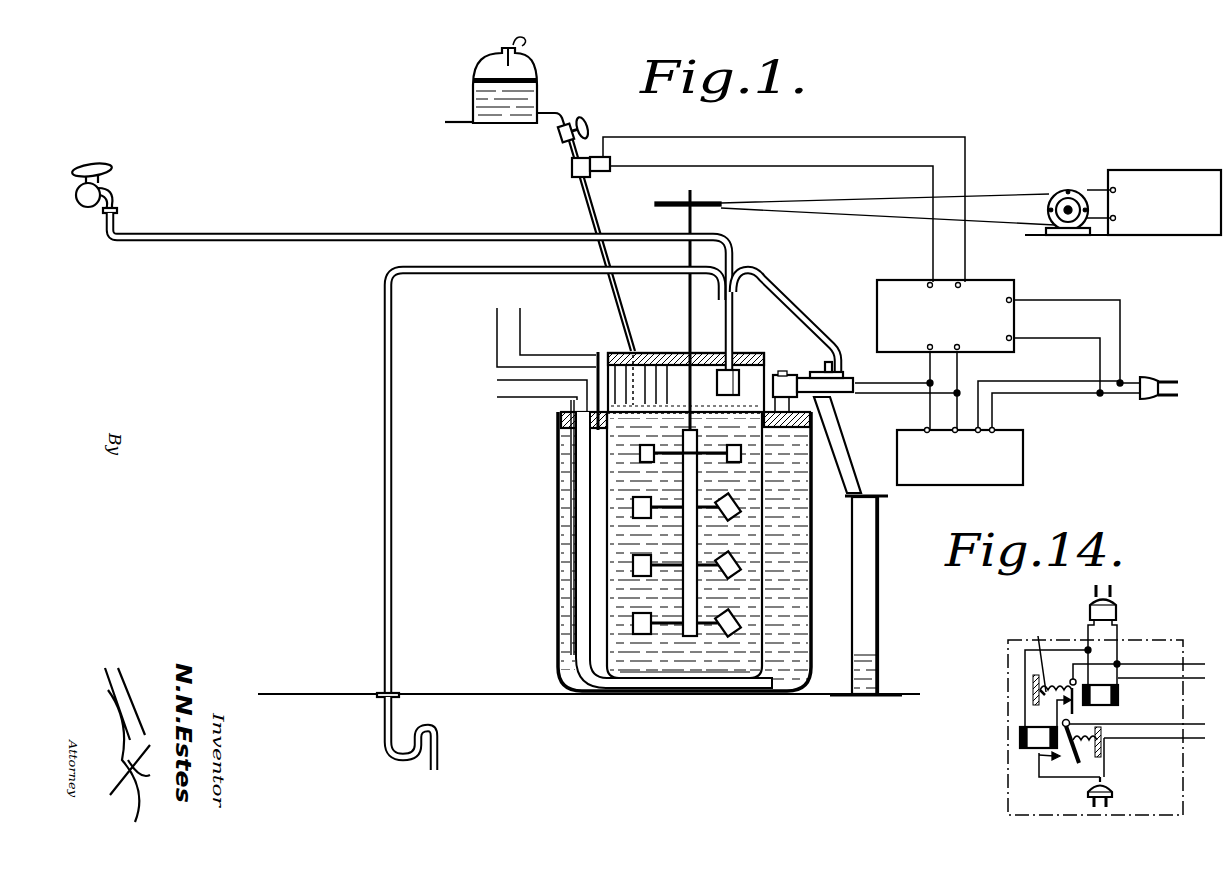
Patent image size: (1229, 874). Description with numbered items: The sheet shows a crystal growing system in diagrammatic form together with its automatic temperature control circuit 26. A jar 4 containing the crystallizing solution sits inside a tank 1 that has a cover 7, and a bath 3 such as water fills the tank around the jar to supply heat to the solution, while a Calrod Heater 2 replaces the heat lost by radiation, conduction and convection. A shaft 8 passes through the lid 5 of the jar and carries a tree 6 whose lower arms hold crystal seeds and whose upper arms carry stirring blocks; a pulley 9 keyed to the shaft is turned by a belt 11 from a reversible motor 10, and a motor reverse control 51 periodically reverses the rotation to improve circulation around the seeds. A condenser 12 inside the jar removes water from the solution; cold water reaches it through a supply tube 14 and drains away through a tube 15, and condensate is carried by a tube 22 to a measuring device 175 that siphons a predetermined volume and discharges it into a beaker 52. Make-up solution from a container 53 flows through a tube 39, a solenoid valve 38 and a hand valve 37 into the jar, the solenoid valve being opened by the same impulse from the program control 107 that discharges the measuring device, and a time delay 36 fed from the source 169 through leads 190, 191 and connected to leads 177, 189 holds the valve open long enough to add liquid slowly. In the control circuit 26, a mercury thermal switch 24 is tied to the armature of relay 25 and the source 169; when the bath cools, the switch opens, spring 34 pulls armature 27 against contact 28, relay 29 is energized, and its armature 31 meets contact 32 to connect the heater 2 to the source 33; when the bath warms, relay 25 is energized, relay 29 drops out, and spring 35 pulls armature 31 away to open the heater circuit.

In FIG. 1, the tank 1 is at (556, 565).
In FIG. 1, the Calrod Heater 2 is at (572, 640).
In FIG. 1, the bath 3 is at (797, 566).
In FIG. 1, the jar 4 is at (758, 636).
In FIG. 1, the lid 5 is at (752, 352).
In FIG. 1, the tree 6 is at (697, 520).
In FIG. 1, the cover 7 is at (568, 410).
In FIG. 1, the shaft 8 is at (688, 345).
In FIG. 1, the pulley 9 is at (680, 203).
In FIG. 1, the reversible motor 10 is at (1066, 191).
In FIG. 1, the belt 11 is at (1007, 196).
In FIG. 1, the condenser 12 is at (716, 388).
In FIG. 1, the cold water supply tube 14 is at (735, 252).
In FIG. 1, the tube 15 is at (395, 413).
In FIG. 1, the tube 22 is at (776, 286).
In FIG. 1, the thermal switch 24 is at (600, 352).
In FIG. 14, the relay 25 is at (1118, 696).
In FIG. 14, the automatic temperature control circuit 26 is at (1003, 675).
In FIG. 14, the armature 27 is at (1066, 683).
In FIG. 14, the contact 28 is at (1057, 712).
In FIG. 14, the relay 29 is at (1018, 740).
In FIG. 14, the armature 31 is at (1074, 764).
In FIG. 14, the contact 32 is at (1040, 766).
In FIG. 14, the 220 volt A. C. source 33 is at (1110, 788).
In FIG. 14, the spring 34 is at (1058, 672).
In FIG. 14, the spring 35 is at (1082, 732).
In FIG. 1, the time delay 36 is at (1016, 280).
In FIG. 1, the hand valve 37 is at (556, 135).
In FIG. 1, the solenoid valve 38 is at (571, 172).
In FIG. 1, the tube 39 is at (592, 212).
In FIG. 1, the motor reverse control 51 is at (1175, 169).
In FIG. 1, the beaker 52 is at (881, 566).
In FIG. 1, the container 53 is at (474, 78).
In FIG. 1, the program control 107 is at (1025, 443).
In FIG. 1, the 110 volt A. C. source 169 is at (1150, 376).
In FIG. 14, the 110 volt A. C. source 169 is at (1116, 600).
In FIG. 1, the device 175 is at (806, 370).
In FIG. 1, the lead 177 is at (952, 412).
In FIG. 1, the lead 189 is at (928, 404).
In FIG. 1, the lead 190 is at (1100, 372).
In FIG. 1, the lead 191 is at (1122, 325).